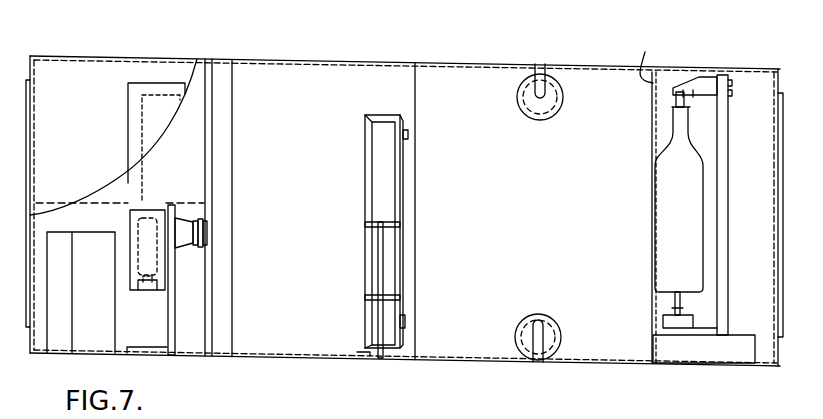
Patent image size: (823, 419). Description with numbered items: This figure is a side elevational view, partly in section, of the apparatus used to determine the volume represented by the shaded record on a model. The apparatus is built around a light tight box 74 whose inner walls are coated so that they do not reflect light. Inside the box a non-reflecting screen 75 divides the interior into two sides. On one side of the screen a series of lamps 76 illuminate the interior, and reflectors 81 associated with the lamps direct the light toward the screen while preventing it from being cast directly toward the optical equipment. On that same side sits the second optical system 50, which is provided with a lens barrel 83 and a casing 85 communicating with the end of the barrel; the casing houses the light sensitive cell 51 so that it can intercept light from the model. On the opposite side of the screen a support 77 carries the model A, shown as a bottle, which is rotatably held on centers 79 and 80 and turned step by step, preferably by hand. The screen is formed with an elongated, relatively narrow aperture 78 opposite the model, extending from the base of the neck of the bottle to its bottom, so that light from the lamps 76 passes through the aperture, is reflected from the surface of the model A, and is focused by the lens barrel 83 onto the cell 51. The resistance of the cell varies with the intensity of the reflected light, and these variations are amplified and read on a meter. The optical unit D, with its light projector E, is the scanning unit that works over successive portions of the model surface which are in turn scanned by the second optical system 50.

The light tight box 74 is at (78, 56).
The screen 75 is at (649, 59).
The lamps 76 is at (552, 85).
The support 77 is at (727, 283).
The aperture 78 is at (652, 183).
The center 79 is at (682, 311).
The center 80 is at (684, 103).
The reflectors 81 is at (536, 114).
The lens barrel 83 is at (200, 212).
The casing 85 is at (130, 216).
The second optical system 50 is at (174, 251).
The light sensitive cell 51 is at (145, 284).
The optical unit D is at (182, 220).
The light projector E is at (142, 253).
The model A is at (655, 212).